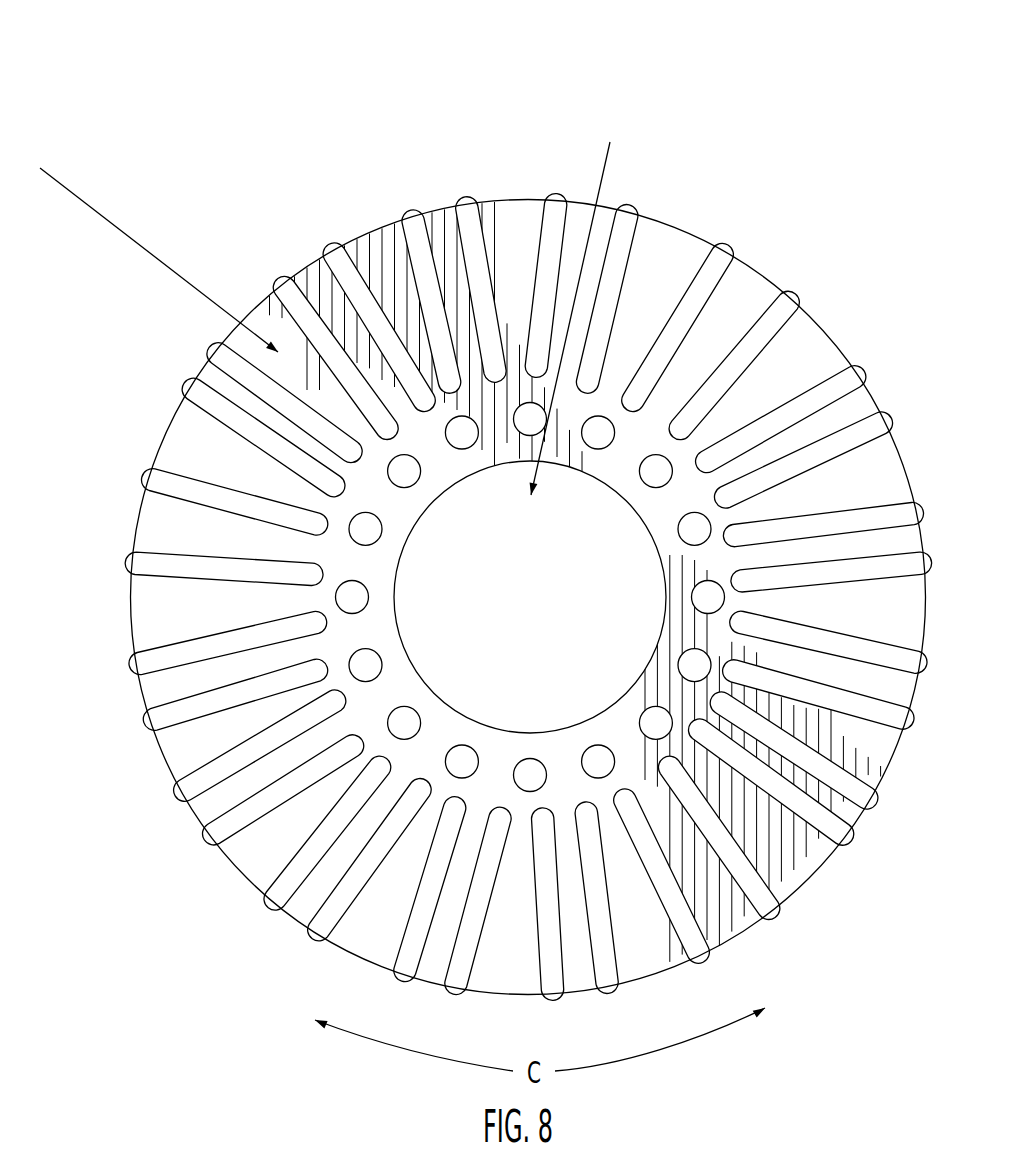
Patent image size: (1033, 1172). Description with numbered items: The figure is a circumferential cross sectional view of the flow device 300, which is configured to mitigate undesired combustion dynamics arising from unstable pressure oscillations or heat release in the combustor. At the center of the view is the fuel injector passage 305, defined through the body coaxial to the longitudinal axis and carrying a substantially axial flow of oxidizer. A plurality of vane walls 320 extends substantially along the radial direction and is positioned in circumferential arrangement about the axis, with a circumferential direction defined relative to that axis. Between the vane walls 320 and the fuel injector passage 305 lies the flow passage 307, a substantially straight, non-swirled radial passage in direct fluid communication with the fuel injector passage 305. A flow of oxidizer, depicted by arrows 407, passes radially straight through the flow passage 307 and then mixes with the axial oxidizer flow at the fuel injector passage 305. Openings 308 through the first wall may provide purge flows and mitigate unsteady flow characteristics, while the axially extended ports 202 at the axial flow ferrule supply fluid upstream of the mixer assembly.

The flow device 300 is at (656, 76).
The fuel injector passage 305 is at (540, 621).
The flow passage 307 is at (320, 288).
The opening 308 is at (427, 452).
The vane walls 320 is at (683, 300).
The axially extended ports 202 is at (652, 724).
The arrows 407 is at (603, 177).